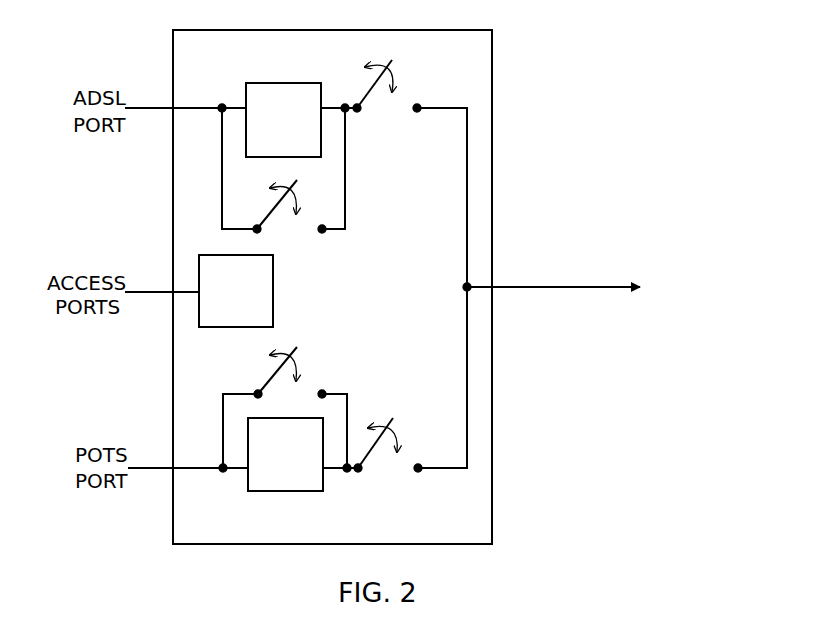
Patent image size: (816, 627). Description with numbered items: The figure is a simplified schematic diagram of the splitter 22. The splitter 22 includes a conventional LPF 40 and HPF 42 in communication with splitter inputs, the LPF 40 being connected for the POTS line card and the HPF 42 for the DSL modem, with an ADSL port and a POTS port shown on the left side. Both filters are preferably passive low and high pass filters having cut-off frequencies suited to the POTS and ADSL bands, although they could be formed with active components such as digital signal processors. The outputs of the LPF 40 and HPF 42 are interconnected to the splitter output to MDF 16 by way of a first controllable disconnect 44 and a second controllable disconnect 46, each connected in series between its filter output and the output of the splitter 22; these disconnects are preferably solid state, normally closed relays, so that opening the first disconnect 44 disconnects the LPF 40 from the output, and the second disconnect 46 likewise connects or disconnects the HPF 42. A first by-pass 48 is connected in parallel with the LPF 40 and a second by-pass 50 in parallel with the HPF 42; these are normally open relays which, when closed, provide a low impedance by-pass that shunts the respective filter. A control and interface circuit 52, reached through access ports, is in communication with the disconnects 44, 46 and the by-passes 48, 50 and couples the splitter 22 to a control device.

The splitter 22 is at (568, 50).
The HPF 42 is at (295, 145).
The LPF 40 is at (297, 478).
The control and interface circuit 52 is at (248, 313).
The second controllable disconnect 46 is at (410, 74).
The second by-pass 50 is at (312, 197).
The first by-pass 48 is at (322, 369).
The first controllable disconnect 44 is at (387, 466).
The MDF 16 is at (577, 285).